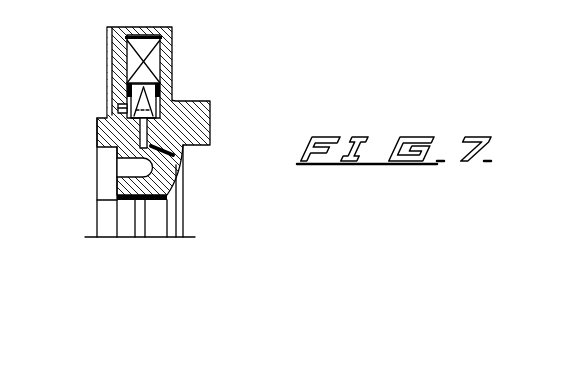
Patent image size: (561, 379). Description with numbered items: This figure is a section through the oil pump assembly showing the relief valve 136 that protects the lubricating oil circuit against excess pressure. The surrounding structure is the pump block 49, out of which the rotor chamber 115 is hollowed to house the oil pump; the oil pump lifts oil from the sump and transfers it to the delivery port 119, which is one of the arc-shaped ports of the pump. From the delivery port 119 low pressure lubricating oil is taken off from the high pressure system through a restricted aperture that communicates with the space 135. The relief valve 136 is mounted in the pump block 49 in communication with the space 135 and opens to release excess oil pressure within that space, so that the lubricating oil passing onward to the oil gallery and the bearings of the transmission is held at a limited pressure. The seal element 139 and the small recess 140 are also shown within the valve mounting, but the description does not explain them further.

The pump block 49 is at (200, 107).
The rotor chamber 115 is at (105, 157).
The delivery port 119 is at (150, 170).
The space 135 is at (175, 192).
The relief valve 136 is at (155, 87).
The seal 139 is at (163, 150).
The recess / lip seal 140 is at (123, 105).